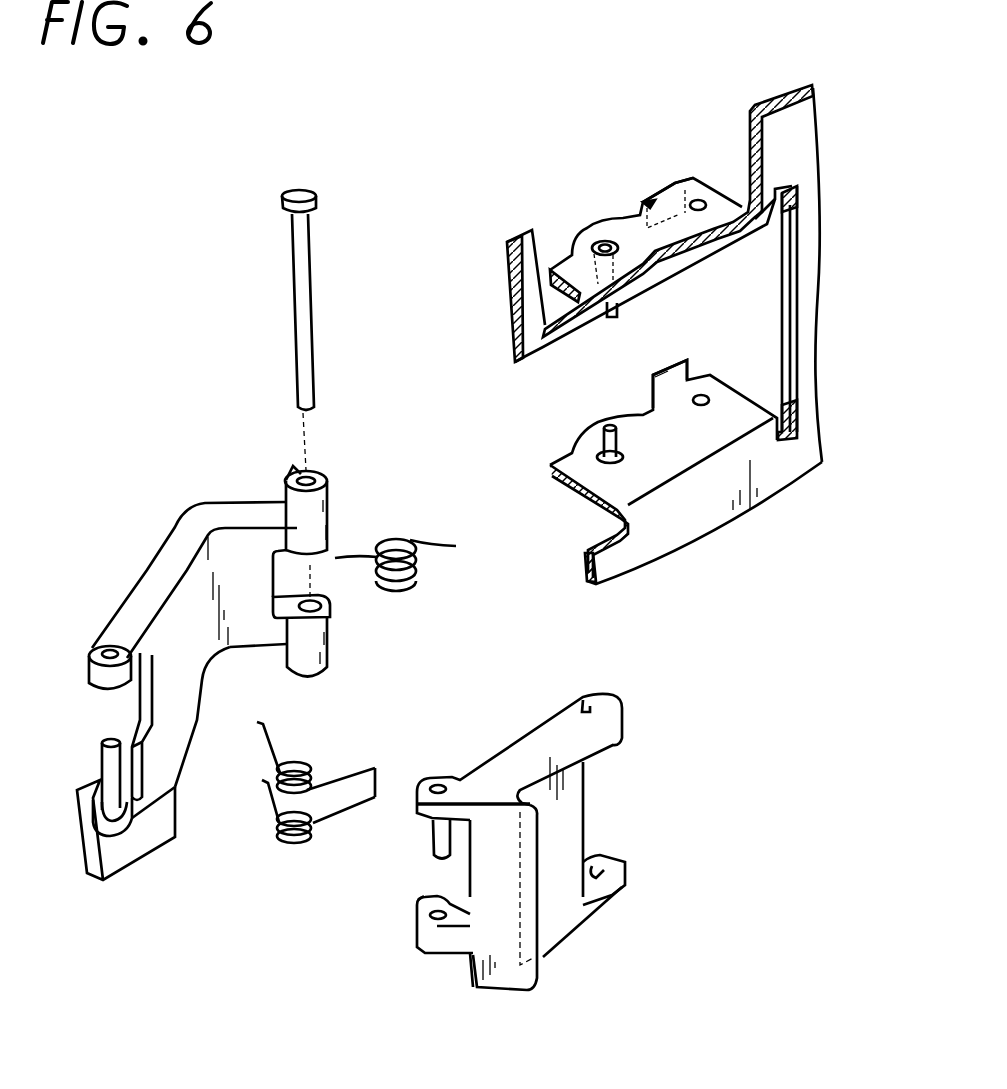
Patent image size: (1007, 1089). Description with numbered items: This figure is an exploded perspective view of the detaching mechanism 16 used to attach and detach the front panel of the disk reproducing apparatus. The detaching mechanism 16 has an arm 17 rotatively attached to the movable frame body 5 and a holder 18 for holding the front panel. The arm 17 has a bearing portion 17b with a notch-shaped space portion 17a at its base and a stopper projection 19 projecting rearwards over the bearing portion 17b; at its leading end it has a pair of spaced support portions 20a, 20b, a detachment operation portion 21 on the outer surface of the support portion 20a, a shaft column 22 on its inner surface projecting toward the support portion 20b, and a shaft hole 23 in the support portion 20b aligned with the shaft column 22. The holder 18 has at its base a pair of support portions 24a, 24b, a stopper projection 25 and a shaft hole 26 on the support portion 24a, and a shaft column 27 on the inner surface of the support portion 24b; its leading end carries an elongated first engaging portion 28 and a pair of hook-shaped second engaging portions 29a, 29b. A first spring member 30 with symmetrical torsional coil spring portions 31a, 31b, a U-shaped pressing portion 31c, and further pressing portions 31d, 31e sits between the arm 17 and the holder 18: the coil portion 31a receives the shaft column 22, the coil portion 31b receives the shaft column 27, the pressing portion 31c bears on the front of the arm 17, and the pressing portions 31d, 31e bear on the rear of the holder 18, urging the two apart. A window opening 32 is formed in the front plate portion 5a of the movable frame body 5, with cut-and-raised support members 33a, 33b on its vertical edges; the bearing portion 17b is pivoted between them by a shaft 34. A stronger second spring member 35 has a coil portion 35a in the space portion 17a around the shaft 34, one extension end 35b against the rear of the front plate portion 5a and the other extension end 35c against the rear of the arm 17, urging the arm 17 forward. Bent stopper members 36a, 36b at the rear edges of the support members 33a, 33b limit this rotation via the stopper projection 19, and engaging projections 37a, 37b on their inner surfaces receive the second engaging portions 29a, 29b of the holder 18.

The movable frame body 5 is at (788, 88).
The front plate portion 5a is at (771, 126).
The detaching mechanism 16 is at (152, 392).
The arm 17 is at (150, 557).
The space portion 17a is at (284, 578).
The bearing portion 17b is at (320, 513).
The holder 18 is at (527, 882).
The stopper projection 19 is at (292, 455).
The support portion 20a is at (125, 830).
The support portion 20b is at (90, 670).
The detachment operation portion 21 is at (160, 827).
The shaft column 22 is at (100, 755).
The shaft hole 23 is at (100, 640).
The support portion 24a is at (420, 955).
The support portion 24b is at (443, 775).
The stopper projection 25 is at (417, 900).
The shaft hole 26 is at (417, 912).
The shaft column 27 is at (430, 845).
The first engaging portion 28 is at (537, 930).
The second engaging portion 29a is at (615, 890).
The second engaging portion 29b is at (615, 733).
The first spring member 30 is at (295, 766).
The torsional coil spring portion 31a is at (300, 845).
The torsional coil spring portion 31b is at (312, 770).
The pressing portion 31c is at (375, 768).
The pressing portion 31d is at (268, 793).
The pressing portion 31e is at (263, 728).
The window opening 32 is at (557, 345).
The support member 33a is at (560, 272).
The support member 33b is at (578, 465).
The shaft 34 is at (314, 307).
The second spring member 35 is at (423, 567).
The coil portion 35a is at (395, 550).
The extension end 35b is at (456, 546).
The extension end 35c is at (350, 562).
The stopper member 36a is at (638, 203).
The stopper member 36b is at (668, 362).
The engaging projection 37a is at (595, 240).
The engaging projection 37b is at (608, 425).